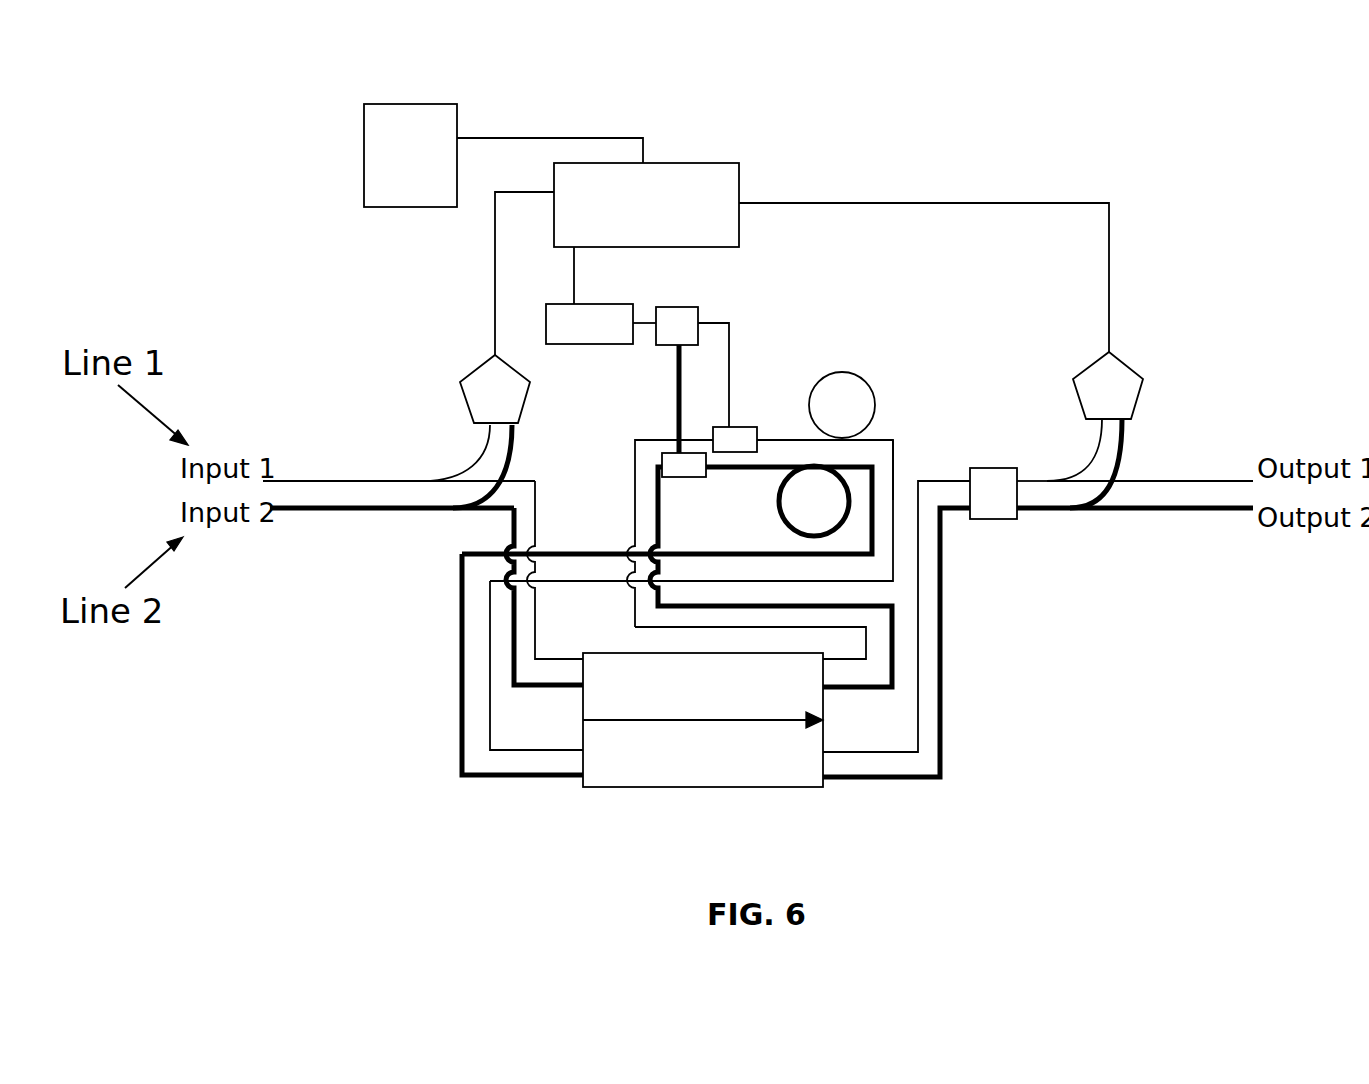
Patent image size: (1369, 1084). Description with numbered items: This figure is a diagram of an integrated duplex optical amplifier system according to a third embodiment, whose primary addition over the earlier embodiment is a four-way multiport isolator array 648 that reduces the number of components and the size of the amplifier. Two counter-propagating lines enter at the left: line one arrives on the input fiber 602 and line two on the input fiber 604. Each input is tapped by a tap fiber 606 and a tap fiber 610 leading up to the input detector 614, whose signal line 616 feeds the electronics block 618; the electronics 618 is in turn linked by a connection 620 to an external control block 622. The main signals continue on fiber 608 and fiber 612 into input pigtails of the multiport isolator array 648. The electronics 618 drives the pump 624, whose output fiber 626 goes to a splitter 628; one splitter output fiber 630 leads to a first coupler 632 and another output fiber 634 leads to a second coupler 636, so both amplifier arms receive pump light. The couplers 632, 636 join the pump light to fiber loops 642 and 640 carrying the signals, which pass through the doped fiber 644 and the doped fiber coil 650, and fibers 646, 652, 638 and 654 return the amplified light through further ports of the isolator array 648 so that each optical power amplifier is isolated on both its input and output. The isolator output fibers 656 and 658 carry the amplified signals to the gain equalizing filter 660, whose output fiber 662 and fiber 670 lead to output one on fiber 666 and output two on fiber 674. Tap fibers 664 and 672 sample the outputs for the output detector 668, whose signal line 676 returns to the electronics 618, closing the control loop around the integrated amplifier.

The input line 1 fiber 602 is at (387, 473).
The input line 2 fiber 604 is at (393, 503).
The tap fiber from line 1 to detector 606 is at (465, 458).
The line 1 fiber to isolator 608 is at (538, 495).
The tap fiber from line 2 to detector 610 is at (513, 455).
The line 2 fiber to isolator 612 is at (510, 533).
The input detector(s) 614 is at (472, 362).
The detector signal line to electronics 616 is at (488, 300).
The electronics 618 is at (700, 162).
The external control connection 620 is at (510, 135).
The external control 622 is at (352, 181).
The pump and pump control line 624 is at (568, 287).
The pump output fiber 626 is at (635, 320).
The splitter 628 is at (685, 300).
The splitter output fiber to coupler 630 is at (733, 337).
The coupler 632 is at (742, 427).
The splitter output fiber to second coupler 634 is at (673, 390).
The second coupler 636 is at (700, 482).
The fiber to isolator 638 is at (633, 625).
The fiber from coupler to isolator 640 is at (842, 690).
The fiber loop 642 is at (763, 437).
The doped fiber 644 is at (840, 365).
The fiber 646 is at (898, 443).
The multiport isolator array 648 is at (622, 788).
The doped fiber coil 650 is at (763, 470).
The fiber from doped fiber coil 652 is at (785, 522).
The fiber to isolator 654 is at (457, 618).
The isolator output fiber 656 is at (927, 475).
The isolator output fiber 658 is at (915, 782).
The gain equalizing filter (GEF) 660 is at (977, 522).
The GEF output fiber 662 is at (1028, 477).
The tap fiber from output 1 to detector 664 is at (1085, 452).
The output 1 fiber 666 is at (1197, 475).
The output detector(s) 668 is at (1135, 360).
The GEF output fiber 670 is at (1028, 510).
The tap fiber from output 2 to detector 672 is at (1125, 463).
The output 2 fiber 674 is at (1135, 513).
The detector signal line to electronics 676 is at (930, 203).